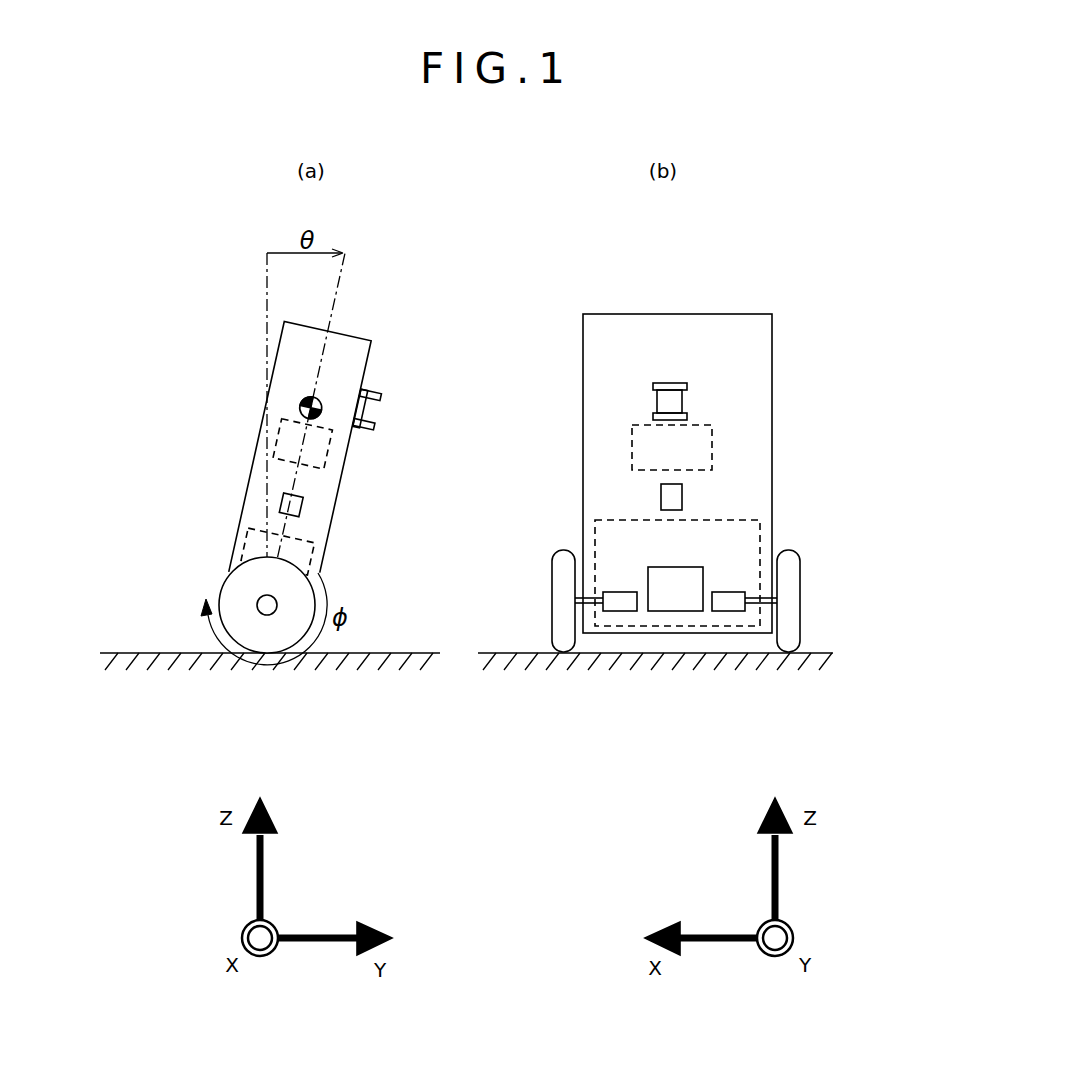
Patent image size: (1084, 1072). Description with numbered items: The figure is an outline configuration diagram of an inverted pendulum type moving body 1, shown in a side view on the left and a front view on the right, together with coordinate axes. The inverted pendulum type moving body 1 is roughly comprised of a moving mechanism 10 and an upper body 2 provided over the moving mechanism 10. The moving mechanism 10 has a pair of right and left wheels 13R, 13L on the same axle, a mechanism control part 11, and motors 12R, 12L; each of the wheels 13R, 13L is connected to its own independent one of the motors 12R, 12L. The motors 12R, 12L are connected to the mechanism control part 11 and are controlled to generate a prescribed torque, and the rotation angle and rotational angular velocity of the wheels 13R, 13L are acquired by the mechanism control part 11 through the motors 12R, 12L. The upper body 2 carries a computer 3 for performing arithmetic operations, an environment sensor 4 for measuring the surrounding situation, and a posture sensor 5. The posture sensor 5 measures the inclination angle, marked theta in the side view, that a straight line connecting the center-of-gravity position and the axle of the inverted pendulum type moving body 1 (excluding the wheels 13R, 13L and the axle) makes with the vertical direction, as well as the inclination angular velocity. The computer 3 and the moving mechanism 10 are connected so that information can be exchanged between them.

The inverted pendulum type moving body 1 is at (463, 228).
The upper body 2 is at (583, 340).
The computer 3 is at (276, 440).
The environment sensor 4 is at (372, 411).
The posture sensor 5 is at (303, 502).
The moving mechanism 10 is at (247, 538).
The mechanism control part 11 is at (675, 611).
The right motor 12R is at (620, 611).
The left motor 12L is at (733, 611).
The right wheel 13R is at (550, 597).
The left wheel 13L is at (800, 592).